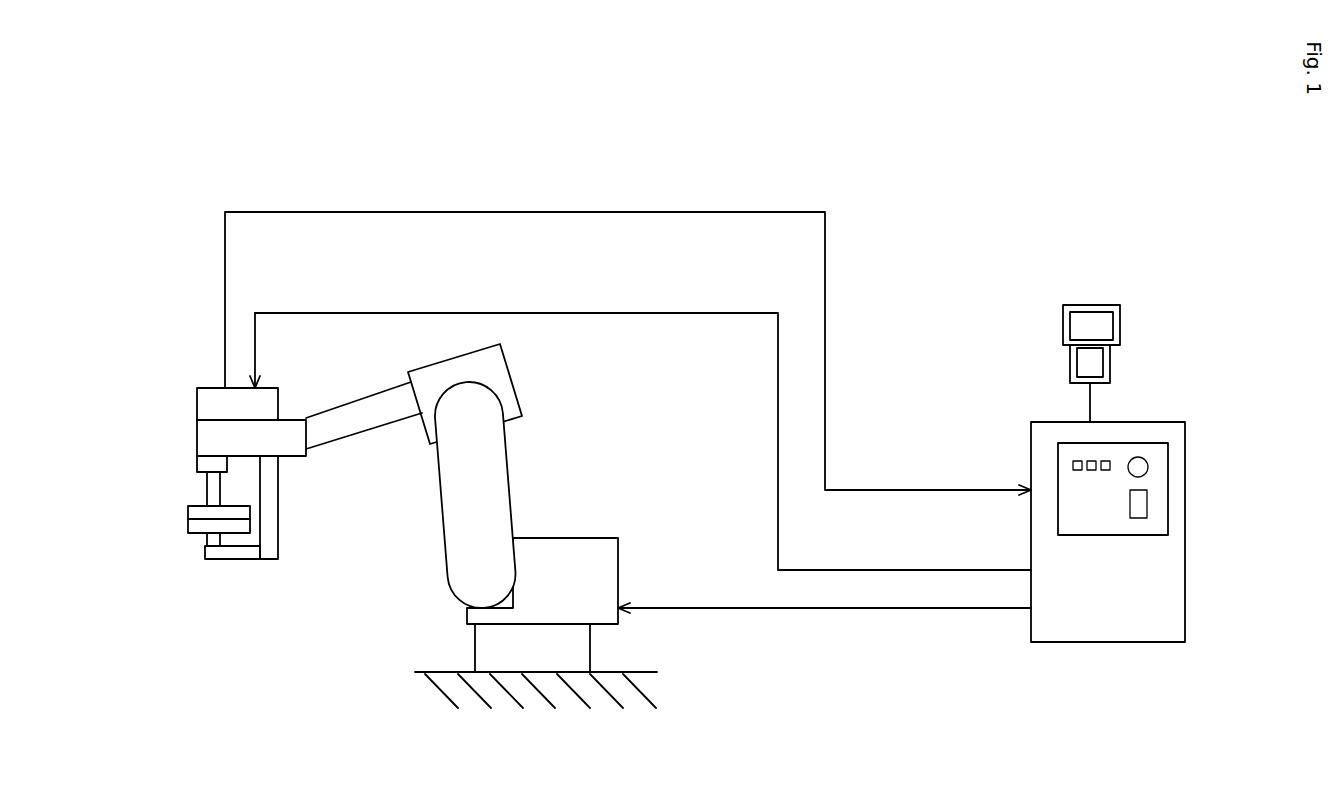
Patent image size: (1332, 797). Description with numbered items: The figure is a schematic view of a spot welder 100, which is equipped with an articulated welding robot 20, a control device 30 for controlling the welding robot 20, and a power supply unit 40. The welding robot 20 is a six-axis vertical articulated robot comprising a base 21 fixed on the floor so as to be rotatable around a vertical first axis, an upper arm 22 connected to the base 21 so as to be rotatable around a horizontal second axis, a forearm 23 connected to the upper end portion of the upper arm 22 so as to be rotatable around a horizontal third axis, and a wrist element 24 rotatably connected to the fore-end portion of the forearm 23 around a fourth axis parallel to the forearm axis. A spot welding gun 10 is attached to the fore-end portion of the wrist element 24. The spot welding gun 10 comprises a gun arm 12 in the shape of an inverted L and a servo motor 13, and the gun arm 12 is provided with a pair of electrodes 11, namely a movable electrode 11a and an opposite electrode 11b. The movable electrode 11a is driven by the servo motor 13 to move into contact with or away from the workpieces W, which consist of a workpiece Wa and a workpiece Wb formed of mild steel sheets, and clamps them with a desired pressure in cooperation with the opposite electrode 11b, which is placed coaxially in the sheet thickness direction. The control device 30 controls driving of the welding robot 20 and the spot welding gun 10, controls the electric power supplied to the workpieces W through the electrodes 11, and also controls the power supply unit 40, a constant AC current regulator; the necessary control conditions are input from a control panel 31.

The spot welder 100 is at (259, 698).
The spot welding gun 10 is at (203, 566).
The pair of electrodes 11 is at (93, 480).
The movable electrode 11a is at (205, 492).
The opposite electrode 11b is at (205, 541).
The gun arm 12 is at (270, 562).
The servo motor 13 is at (210, 401).
The workpieces W is at (334, 485).
The workpiece Wa is at (252, 510).
The workpiece Wb is at (252, 521).
The welding robot 20 is at (613, 525).
The base 21 is at (607, 565).
The upper arm 22 is at (490, 470).
The forearm 23 is at (497, 370).
The wrist element 24 is at (357, 410).
The control device 30 is at (1198, 535).
The control panel 31 is at (1145, 443).
The power supply unit 40 is at (1133, 337).